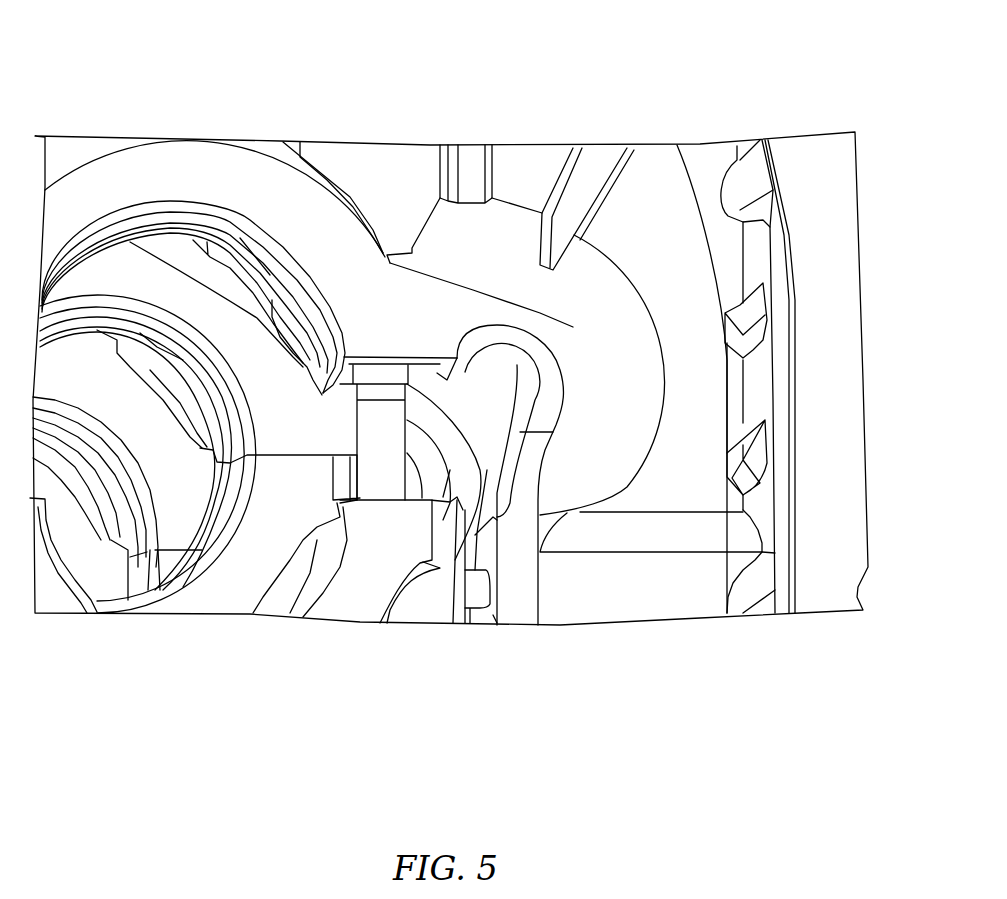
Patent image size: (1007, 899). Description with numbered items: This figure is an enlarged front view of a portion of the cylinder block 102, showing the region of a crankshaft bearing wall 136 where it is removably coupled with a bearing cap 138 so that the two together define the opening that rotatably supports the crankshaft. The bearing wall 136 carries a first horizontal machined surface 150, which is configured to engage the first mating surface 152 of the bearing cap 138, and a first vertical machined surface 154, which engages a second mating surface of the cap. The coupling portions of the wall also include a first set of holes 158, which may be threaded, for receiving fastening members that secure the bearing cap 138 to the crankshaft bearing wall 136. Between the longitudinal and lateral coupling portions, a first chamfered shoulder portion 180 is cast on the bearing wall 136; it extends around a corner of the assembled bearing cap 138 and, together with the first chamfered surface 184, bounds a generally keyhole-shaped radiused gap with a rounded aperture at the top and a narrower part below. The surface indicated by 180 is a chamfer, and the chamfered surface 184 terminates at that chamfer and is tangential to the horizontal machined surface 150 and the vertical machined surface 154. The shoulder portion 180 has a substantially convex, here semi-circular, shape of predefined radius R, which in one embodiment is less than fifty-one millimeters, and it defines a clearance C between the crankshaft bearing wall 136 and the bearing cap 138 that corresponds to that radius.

The cylinder block 102 is at (807, 105).
The crankshaft bearing wall 136 is at (647, 217).
The bearing cap 138 is at (347, 598).
The first horizontal machined surface 150 is at (473, 360).
The first mating surface 152 is at (455, 627).
The first vertical machined surface 154 is at (492, 627).
The first set of holes 158 is at (273, 313).
The first chamfered shoulder portion 180 is at (555, 373).
The first chamfered surface 184 is at (525, 392).
The predefined radius R is at (498, 367).
The clearance C is at (494, 378).